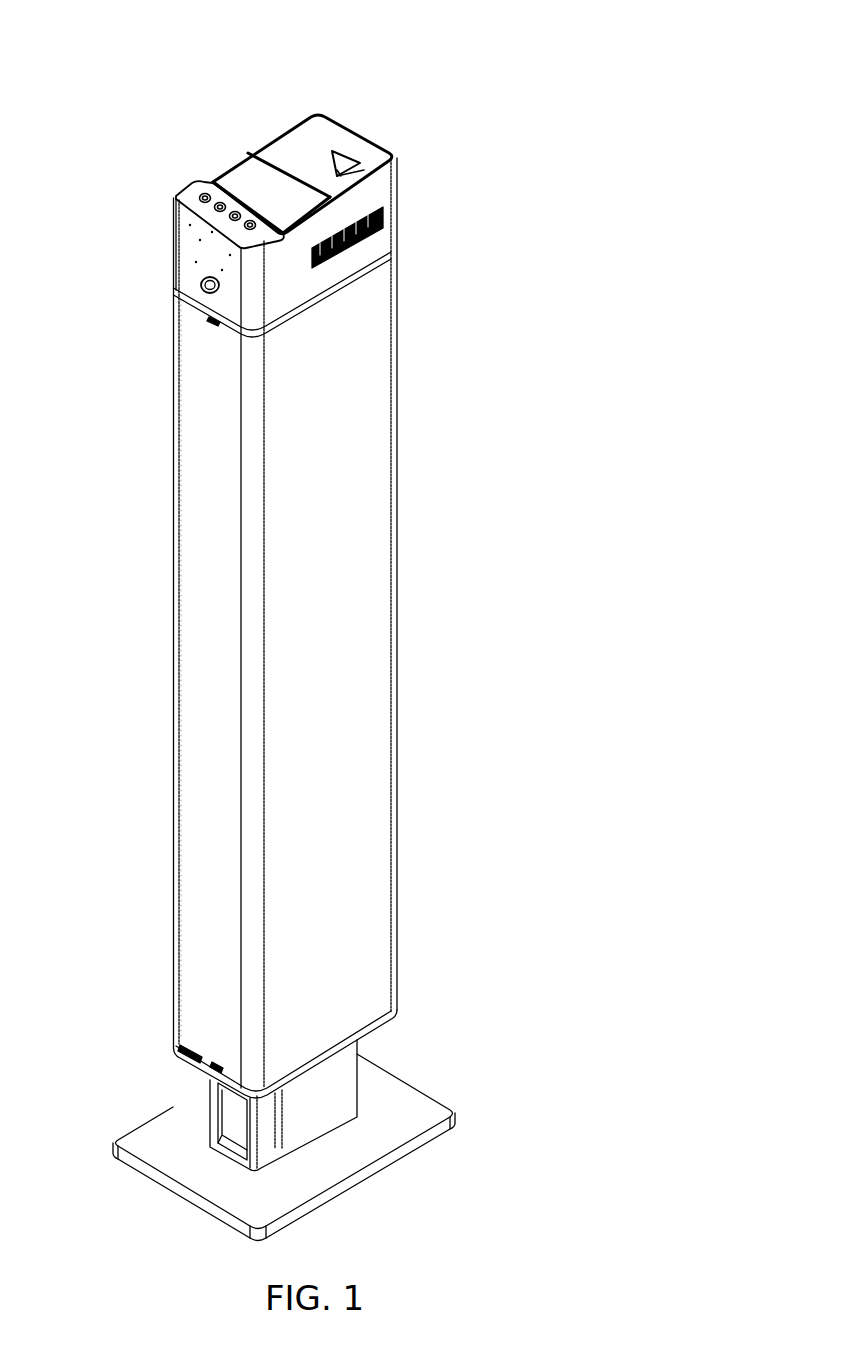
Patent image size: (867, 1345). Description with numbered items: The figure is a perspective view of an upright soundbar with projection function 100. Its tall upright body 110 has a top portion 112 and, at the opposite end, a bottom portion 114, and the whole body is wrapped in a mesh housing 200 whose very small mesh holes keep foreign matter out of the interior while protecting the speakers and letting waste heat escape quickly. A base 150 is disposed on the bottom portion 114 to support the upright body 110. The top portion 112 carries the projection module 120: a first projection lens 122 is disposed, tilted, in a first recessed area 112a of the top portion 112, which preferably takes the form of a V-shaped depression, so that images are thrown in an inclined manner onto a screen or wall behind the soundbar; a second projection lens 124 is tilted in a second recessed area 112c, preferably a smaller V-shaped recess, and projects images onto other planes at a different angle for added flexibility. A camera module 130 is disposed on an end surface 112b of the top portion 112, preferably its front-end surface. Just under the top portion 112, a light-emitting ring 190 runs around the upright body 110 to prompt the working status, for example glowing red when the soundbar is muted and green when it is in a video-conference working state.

The upright soundbar with projection function 100 is at (157, 56).
The upright body 110 is at (375, 580).
The top portion 112 is at (300, 140).
The first recessed area 112a is at (243, 173).
The end surface 112b is at (183, 247).
The second recessed area 112c is at (341, 158).
The projection module 120 is at (522, 135).
The first projection lens 122 is at (277, 217).
The second projection lens 124 is at (337, 170).
The camera module 130 is at (205, 280).
The light-emitting ring 190 is at (392, 257).
The mesh housing 200 is at (195, 800).
The bottom portion 114 is at (190, 1038).
The base 150 is at (345, 1155).